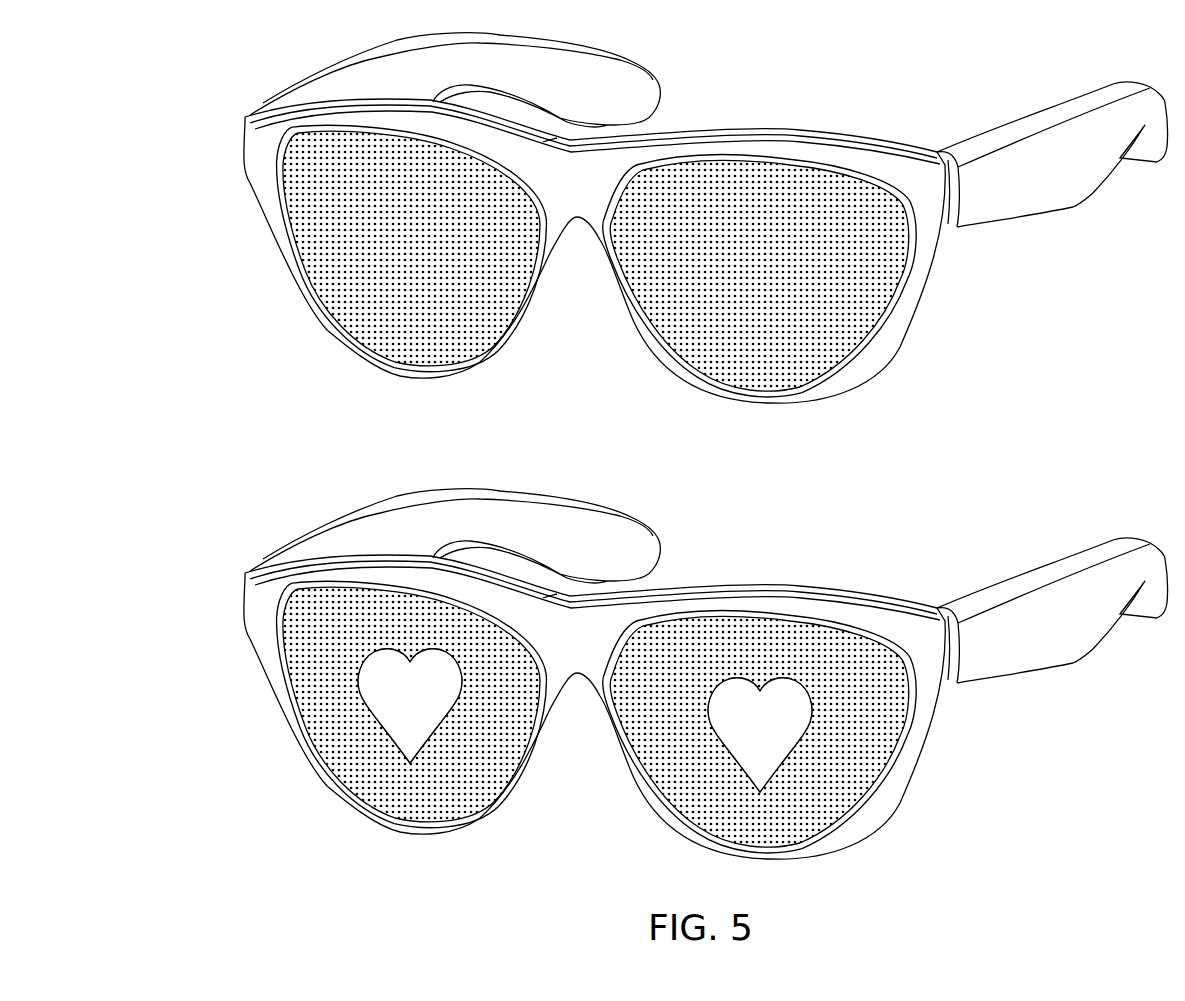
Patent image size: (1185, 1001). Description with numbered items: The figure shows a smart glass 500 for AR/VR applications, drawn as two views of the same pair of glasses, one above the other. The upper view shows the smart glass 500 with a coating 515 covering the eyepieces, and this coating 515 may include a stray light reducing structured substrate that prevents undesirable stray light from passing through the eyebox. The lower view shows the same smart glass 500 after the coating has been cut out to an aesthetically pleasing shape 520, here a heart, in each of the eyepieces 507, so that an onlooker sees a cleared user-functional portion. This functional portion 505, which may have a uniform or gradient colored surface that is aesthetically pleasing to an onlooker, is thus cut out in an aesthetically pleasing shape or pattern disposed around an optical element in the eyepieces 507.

The smart glass 500 is at (687, 237).
The coating 515 is at (727, 328).
The eyepieces 507 is at (348, 618).
The aesthetically pleasing shape 520 is at (447, 650).
The functional portion 505 is at (394, 697).